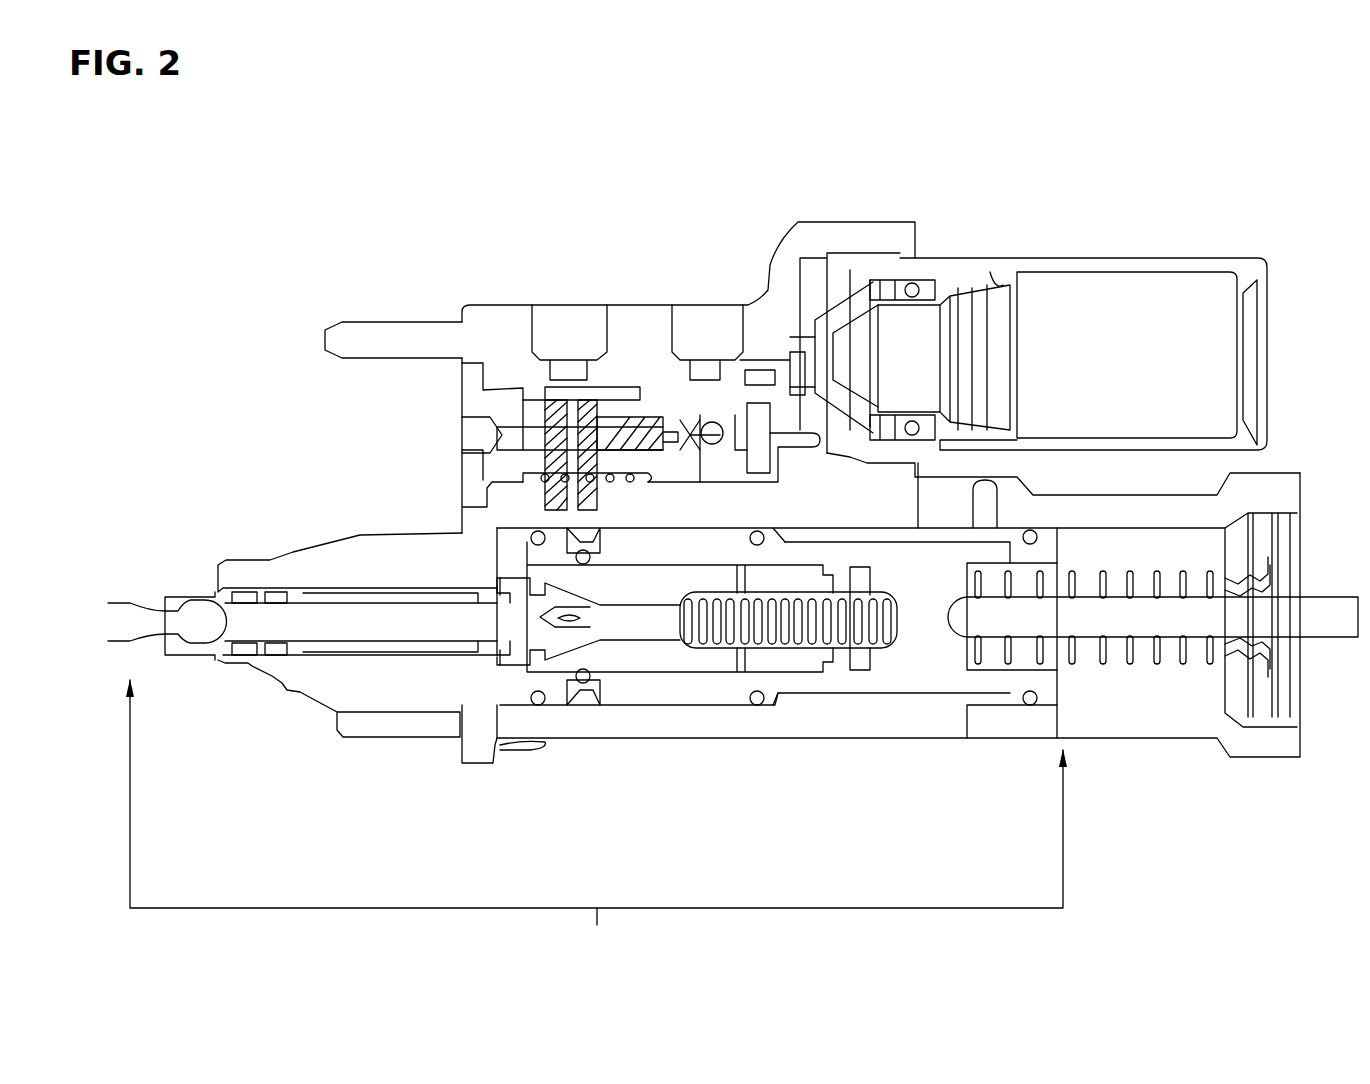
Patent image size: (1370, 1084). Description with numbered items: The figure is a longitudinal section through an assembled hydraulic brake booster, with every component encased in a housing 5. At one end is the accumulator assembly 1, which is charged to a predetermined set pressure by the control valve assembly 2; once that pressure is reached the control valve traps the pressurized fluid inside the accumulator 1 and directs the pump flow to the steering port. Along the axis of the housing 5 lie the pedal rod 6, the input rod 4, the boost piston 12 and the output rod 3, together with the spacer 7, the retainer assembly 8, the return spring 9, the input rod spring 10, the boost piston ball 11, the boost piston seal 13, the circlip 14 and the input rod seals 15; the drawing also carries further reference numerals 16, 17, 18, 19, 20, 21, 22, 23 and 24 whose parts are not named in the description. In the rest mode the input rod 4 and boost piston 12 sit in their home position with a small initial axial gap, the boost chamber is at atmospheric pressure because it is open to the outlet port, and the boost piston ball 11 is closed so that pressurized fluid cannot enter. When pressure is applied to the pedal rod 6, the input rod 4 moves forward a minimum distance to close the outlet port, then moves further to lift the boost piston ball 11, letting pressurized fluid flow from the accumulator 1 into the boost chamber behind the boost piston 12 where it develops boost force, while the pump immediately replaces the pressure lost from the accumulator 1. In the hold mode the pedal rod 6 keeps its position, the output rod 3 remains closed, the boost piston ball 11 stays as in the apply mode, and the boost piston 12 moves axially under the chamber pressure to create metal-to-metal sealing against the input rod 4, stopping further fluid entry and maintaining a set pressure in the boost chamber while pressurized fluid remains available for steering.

The accumulator assembly 1 is at (990, 270).
The control valve assembly 2 is at (660, 393).
The output rod 3 is at (1333, 617).
The input rod 4 is at (349, 612).
The housing 5 is at (383, 672).
The pedal rod 6 is at (129, 595).
The spacer 7 is at (970, 650).
The retainer assembly 8 is at (1263, 680).
The return spring 9 is at (1148, 645).
The input rod spring 10 is at (866, 650).
The boost piston ball 11 is at (590, 713).
The boost piston 12 is at (923, 652).
The boost piston seal 13 is at (768, 708).
The circlip 14 is at (529, 675).
The input rod seals 15 is at (248, 583).
The rod seals 16 is at (260, 612).
The seal holder 17 is at (573, 707).
The check ball 18 is at (702, 392).
The spool end 19 is at (535, 423).
The valve block 20 is at (760, 423).
The seal pack 21 is at (570, 428).
The valve spool 22 is at (627, 417).
The cross valve 23 is at (709, 422).
The overall length 24 is at (596, 820).